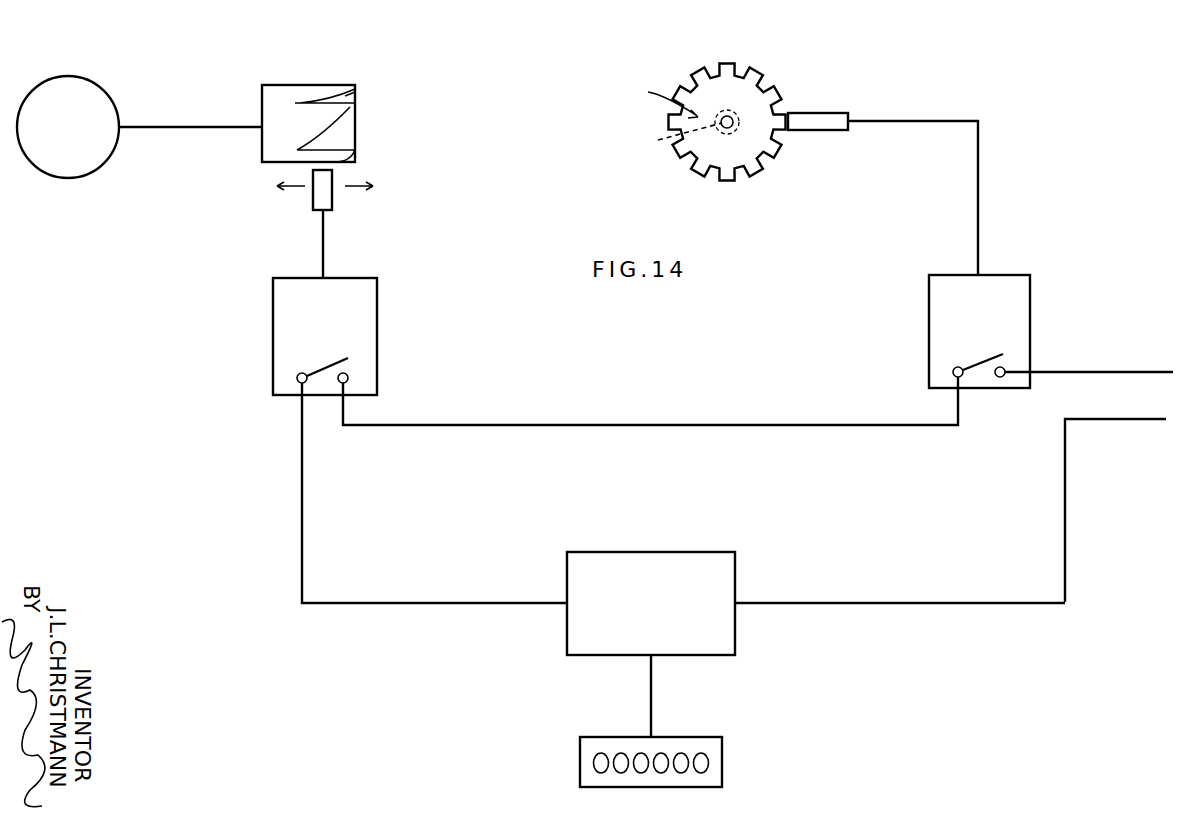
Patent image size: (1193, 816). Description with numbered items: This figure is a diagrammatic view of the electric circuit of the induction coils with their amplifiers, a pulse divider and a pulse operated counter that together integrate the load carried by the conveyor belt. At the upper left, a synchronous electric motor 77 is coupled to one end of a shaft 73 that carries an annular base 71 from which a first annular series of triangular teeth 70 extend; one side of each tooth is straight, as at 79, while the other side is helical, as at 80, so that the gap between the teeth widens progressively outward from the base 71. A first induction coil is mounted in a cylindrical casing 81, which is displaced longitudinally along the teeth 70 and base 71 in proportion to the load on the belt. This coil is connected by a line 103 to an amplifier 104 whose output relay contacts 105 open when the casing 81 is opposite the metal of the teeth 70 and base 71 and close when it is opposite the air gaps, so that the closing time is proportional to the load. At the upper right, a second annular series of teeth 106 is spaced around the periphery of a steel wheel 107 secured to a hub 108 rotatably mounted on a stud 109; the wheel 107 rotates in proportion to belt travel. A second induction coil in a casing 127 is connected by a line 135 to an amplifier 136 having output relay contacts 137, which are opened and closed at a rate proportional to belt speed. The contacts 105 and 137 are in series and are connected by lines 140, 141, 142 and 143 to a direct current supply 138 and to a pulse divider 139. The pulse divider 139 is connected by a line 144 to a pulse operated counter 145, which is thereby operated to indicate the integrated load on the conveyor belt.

The triangular teeth 70 is at (337, 110).
The annular base 71 is at (279, 90).
The shaft 73 is at (173, 125).
The synchronous electric motor 77 is at (75, 88).
The straight side of tooth 79 is at (355, 96).
The helical side of tooth 80 is at (350, 160).
The cylindrical casing 81 is at (334, 196).
The line 103 is at (326, 251).
The amplifier 104 is at (348, 347).
The output relay contacts 105 is at (331, 371).
The teeth 106 is at (758, 72).
The steel wheel 107 is at (654, 96).
The hub 108 is at (670, 138).
The stud 109 is at (732, 135).
The casing 127 is at (813, 118).
The line 135 is at (919, 121).
The amplifier 136 is at (991, 345).
The output relay contacts 137 is at (988, 363).
The direct current supply 138 is at (1167, 375).
The pulse divider 139 is at (668, 629).
The line 140 is at (614, 425).
The line 141 is at (1115, 368).
The line 142 is at (887, 603).
The line 143 is at (452, 603).
The line 144 is at (652, 700).
The pulse operated counter 145 is at (712, 740).